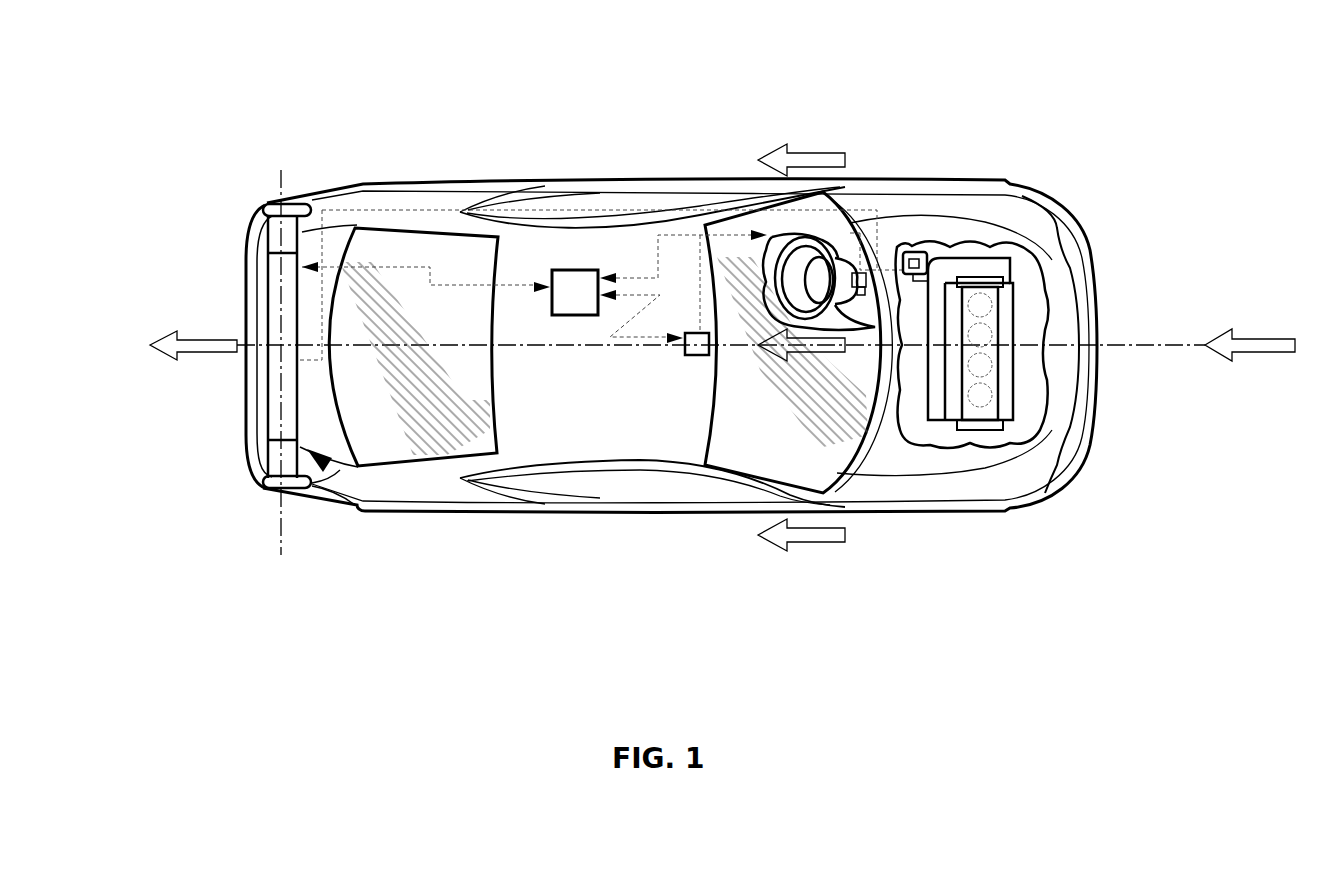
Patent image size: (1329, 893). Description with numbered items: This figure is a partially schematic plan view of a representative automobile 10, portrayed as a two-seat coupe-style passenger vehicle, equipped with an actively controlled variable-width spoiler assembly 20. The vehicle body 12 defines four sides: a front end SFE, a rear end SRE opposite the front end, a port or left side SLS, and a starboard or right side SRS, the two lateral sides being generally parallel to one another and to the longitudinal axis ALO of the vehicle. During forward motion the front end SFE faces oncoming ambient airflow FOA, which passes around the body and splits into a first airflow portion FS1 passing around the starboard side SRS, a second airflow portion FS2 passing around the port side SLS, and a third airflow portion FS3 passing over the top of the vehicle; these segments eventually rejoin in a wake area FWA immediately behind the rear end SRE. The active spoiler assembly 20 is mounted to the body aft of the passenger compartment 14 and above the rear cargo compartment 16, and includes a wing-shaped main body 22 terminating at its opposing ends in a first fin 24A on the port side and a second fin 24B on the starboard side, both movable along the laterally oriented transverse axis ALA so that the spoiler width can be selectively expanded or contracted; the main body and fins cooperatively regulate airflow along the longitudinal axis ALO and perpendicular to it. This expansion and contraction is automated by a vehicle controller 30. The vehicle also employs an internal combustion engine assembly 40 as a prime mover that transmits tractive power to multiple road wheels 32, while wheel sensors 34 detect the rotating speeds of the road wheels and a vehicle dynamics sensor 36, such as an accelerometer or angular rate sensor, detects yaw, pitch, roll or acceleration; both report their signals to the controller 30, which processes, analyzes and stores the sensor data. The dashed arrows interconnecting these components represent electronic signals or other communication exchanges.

The automobile 10 is at (1135, 596).
The vehicle body 12 is at (713, 514).
The passenger compartment 14 is at (648, 184).
The rear cargo compartment 16 is at (358, 183).
The active spoiler assembly 20 is at (333, 468).
The wing-shaped main body 22 is at (297, 342).
The first fin 24A is at (262, 200).
The second fin 24B is at (265, 492).
The vehicle controller 30 is at (553, 270).
The road wheels 32 is at (370, 186).
The wheel sensors 34 is at (903, 250).
The vehicle dynamics sensor 36 is at (693, 357).
The internal combustion engine assembly 40 is at (1160, 320).
The transverse vehicle axis ALA is at (280, 175).
The longitudinal axis ALO is at (1197, 345).
The left side SLS is at (718, 190).
The right side SRS is at (667, 505).
The rear end SRE is at (243, 305).
The front end SFE is at (1095, 277).
The wake area FWA is at (195, 358).
The oncoming ambient airflow FOA is at (1287, 337).
The first airflow portion FS1 is at (810, 545).
The second airflow portion FS2 is at (810, 152).
The third airflow portion FS3 is at (827, 358).